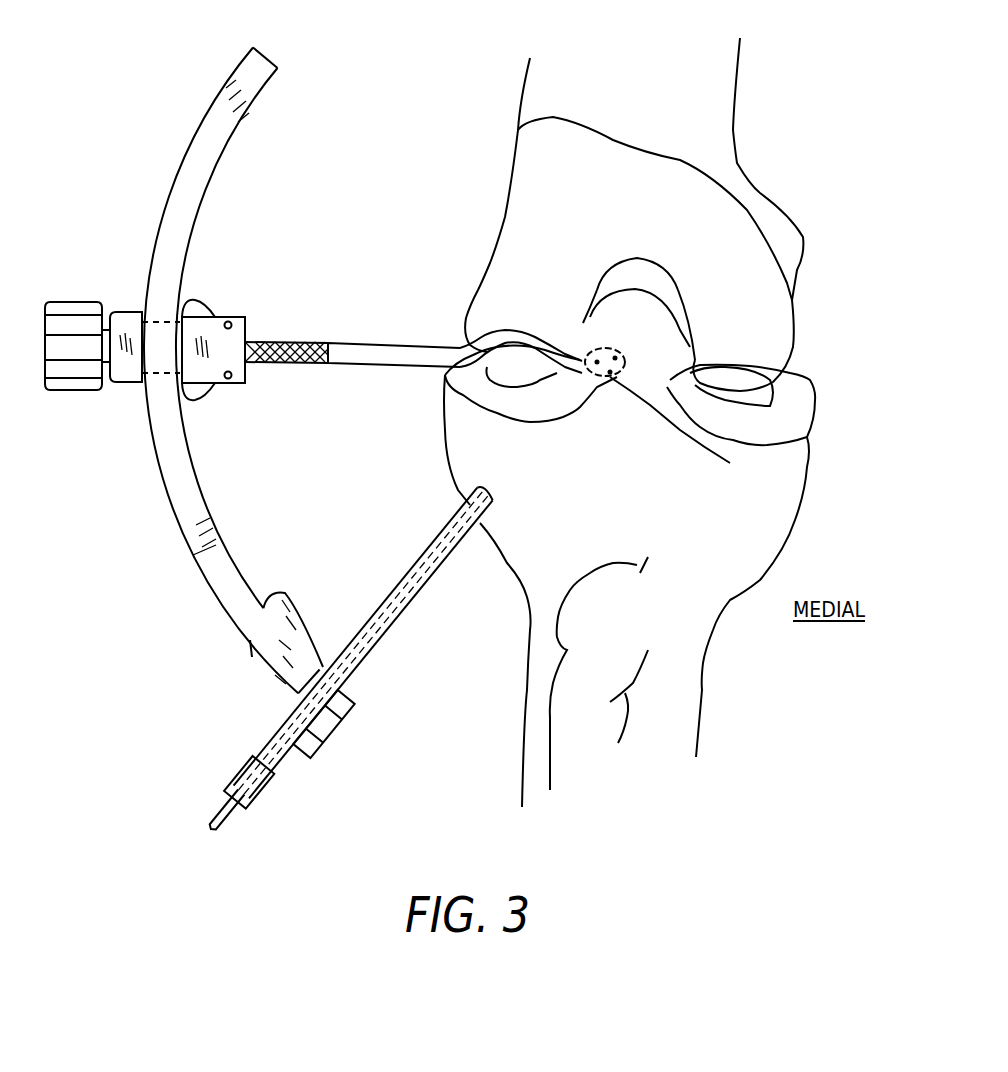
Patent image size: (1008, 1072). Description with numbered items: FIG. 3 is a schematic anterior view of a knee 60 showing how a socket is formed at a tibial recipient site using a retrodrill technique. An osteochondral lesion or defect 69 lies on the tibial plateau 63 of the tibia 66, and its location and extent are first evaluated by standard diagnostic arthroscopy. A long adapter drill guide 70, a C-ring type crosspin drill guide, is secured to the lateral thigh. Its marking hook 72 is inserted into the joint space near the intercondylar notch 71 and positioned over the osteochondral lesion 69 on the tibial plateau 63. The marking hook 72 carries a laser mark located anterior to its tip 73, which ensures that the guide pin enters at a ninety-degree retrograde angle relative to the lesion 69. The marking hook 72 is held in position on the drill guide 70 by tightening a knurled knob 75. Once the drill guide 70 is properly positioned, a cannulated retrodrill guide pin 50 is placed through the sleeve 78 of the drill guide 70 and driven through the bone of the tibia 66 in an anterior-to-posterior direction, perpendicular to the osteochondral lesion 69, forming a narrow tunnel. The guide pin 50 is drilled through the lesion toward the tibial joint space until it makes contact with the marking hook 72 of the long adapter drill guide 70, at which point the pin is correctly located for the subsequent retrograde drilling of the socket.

The cannulated retrodrill guide pin 50 is at (230, 813).
The knee 60 is at (495, 215).
The tibial plateau 63 is at (560, 372).
The tibia 66 is at (785, 503).
The osteochondral lesion 69 is at (730, 463).
The long adapter drill guide 70 is at (170, 490).
The intercondylar notch 71 is at (622, 328).
The marking hook 72 is at (348, 342).
The tip of the marking hook 73 is at (625, 366).
The knurled knob 75 is at (82, 307).
The sleeve 78 is at (383, 652).